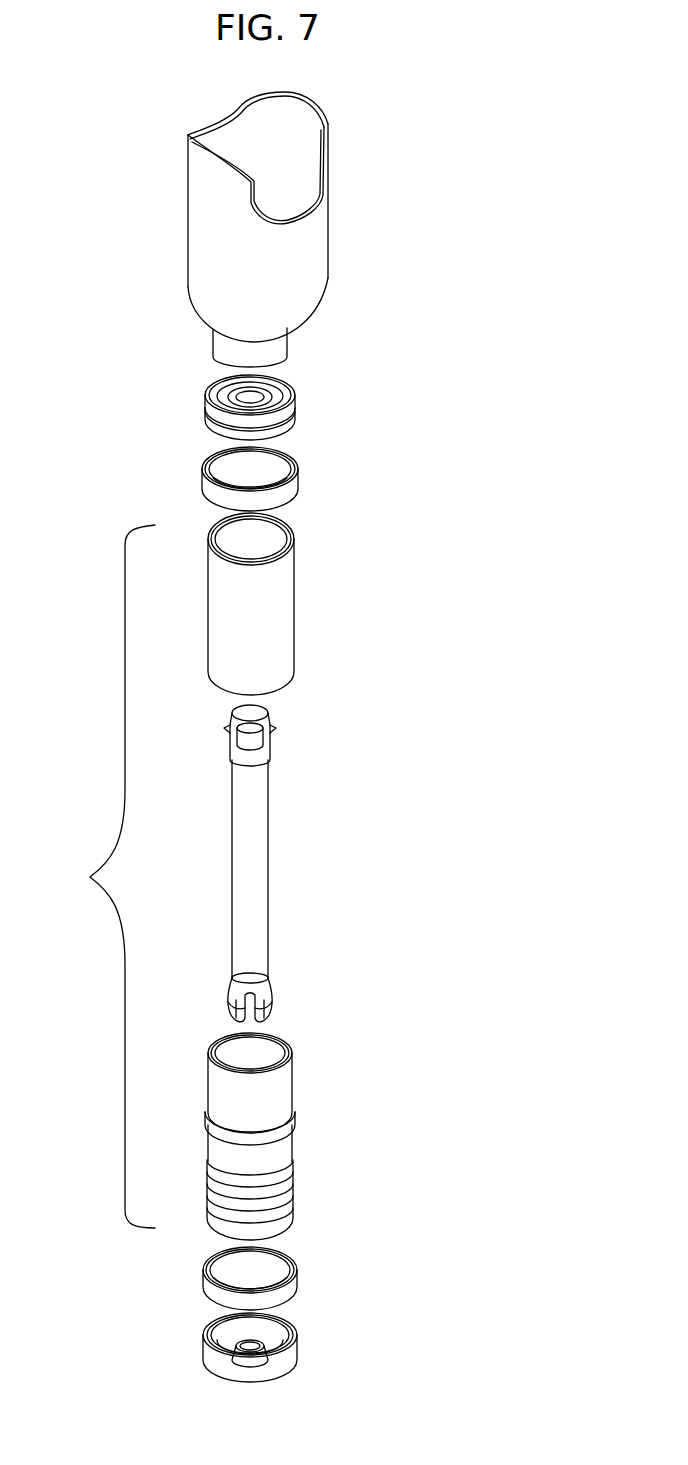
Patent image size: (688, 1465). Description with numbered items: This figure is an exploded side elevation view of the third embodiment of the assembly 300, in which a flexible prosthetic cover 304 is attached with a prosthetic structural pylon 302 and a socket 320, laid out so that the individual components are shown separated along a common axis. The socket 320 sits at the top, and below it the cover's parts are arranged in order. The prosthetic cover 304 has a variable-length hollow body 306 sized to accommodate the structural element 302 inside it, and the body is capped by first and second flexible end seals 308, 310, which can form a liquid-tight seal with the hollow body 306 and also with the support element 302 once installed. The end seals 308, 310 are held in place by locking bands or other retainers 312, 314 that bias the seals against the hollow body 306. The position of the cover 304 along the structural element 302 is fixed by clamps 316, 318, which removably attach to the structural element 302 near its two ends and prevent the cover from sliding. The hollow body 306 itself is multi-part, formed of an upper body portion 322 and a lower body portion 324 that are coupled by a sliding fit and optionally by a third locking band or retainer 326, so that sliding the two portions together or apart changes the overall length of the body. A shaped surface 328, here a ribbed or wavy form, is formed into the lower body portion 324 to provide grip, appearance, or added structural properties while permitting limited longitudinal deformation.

The assembly 300 is at (407, 118).
The prosthetic structural pylon 302 is at (262, 889).
The flexible prosthetic cover 304 is at (369, 597).
The hollow body 306 is at (102, 876).
The first flexible end seal 308 is at (293, 407).
The second flexible end seal 310 is at (295, 1347).
The retainer 312 is at (297, 484).
The retainer 314 is at (300, 1280).
The clamp 316 is at (269, 746).
The clamp 318 is at (269, 991).
The socket 320 is at (322, 247).
The upper body portion 322 is at (297, 579).
The lower body portion 324 is at (295, 1084).
The third locking band or retainer 326 is at (295, 1123).
The shaped surface 328 is at (295, 1216).